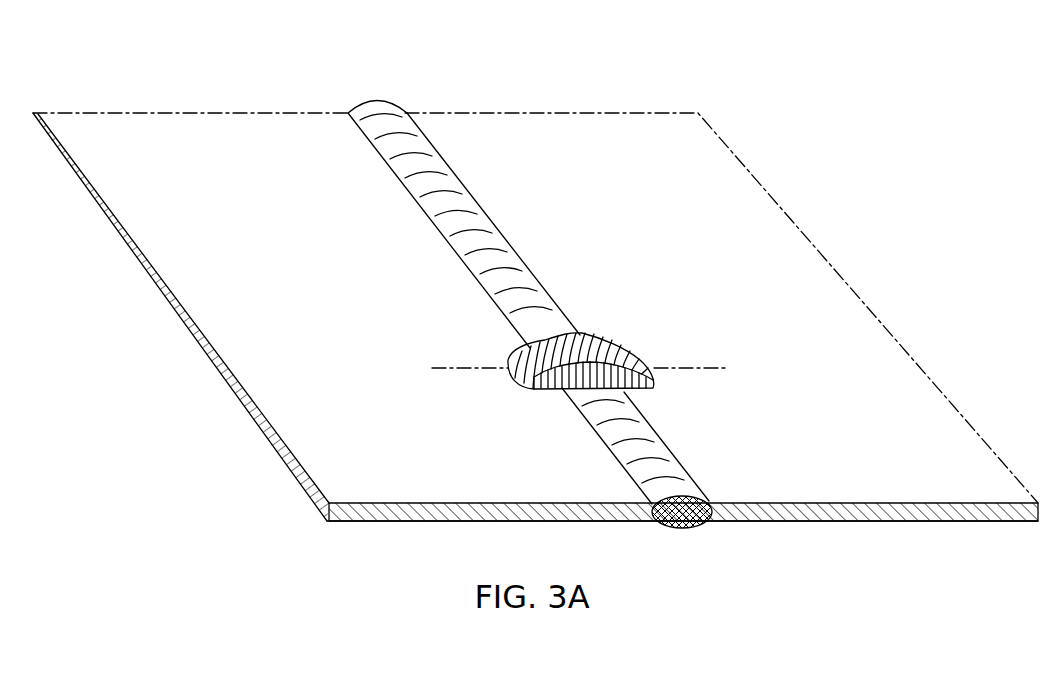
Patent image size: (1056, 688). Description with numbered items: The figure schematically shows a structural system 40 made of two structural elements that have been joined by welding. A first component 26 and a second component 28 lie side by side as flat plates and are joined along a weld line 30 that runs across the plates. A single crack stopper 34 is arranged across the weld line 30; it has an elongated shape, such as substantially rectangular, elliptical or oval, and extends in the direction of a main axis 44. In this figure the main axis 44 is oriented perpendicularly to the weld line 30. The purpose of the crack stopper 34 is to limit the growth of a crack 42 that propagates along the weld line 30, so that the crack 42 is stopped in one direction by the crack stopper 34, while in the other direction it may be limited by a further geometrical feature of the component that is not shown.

The first component 26 is at (183, 121).
The second component 28 is at (556, 126).
The weld line 30 is at (470, 204).
The crack stopper 34 is at (620, 345).
The structural system 40 is at (535, 277).
The crack 42 is at (593, 430).
The main axis 44 is at (460, 368).